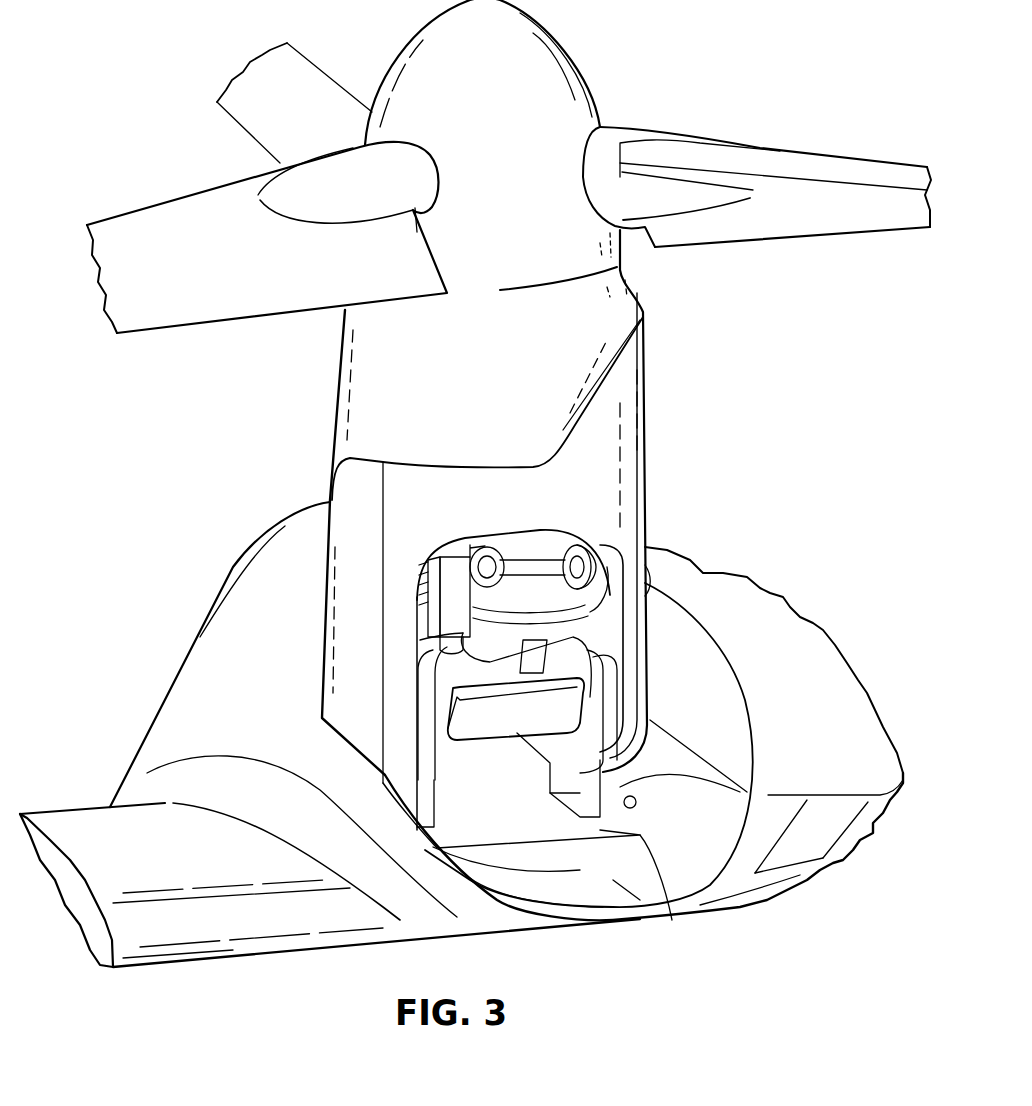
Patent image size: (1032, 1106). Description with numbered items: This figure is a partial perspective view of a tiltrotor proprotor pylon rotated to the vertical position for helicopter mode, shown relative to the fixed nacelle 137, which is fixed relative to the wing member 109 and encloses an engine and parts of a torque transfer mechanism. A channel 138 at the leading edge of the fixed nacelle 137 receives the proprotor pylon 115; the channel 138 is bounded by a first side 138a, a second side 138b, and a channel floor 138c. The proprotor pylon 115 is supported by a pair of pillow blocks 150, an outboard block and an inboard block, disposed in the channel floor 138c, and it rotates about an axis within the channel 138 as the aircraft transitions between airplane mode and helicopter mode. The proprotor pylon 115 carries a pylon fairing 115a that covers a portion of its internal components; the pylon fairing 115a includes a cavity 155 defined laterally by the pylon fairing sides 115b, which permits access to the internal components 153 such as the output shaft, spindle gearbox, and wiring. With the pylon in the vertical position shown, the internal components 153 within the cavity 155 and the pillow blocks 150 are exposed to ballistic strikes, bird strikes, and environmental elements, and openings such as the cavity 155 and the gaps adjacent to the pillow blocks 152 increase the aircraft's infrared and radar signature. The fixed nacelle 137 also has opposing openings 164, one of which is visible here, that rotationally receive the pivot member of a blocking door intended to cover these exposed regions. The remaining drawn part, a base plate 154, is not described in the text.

The wing member 109 is at (248, 950).
The proprotor pylon 115 is at (337, 397).
The pylon fairing 115a is at (636, 472).
The pylon fairing sides 115b is at (645, 593).
The fixed nacelle 137 is at (823, 636).
The channel 138 is at (686, 648).
The first side 138a is at (737, 752).
The second side 138b is at (325, 850).
The channel floor 138c is at (627, 843).
The pillow blocks 150 is at (423, 707).
The gaps adjacent to the pillow blocks 152 is at (410, 648).
The internal components 153 is at (598, 625).
The base plate 154 is at (620, 787).
The cavity 155 is at (422, 600).
The opposing openings 164 is at (636, 804).